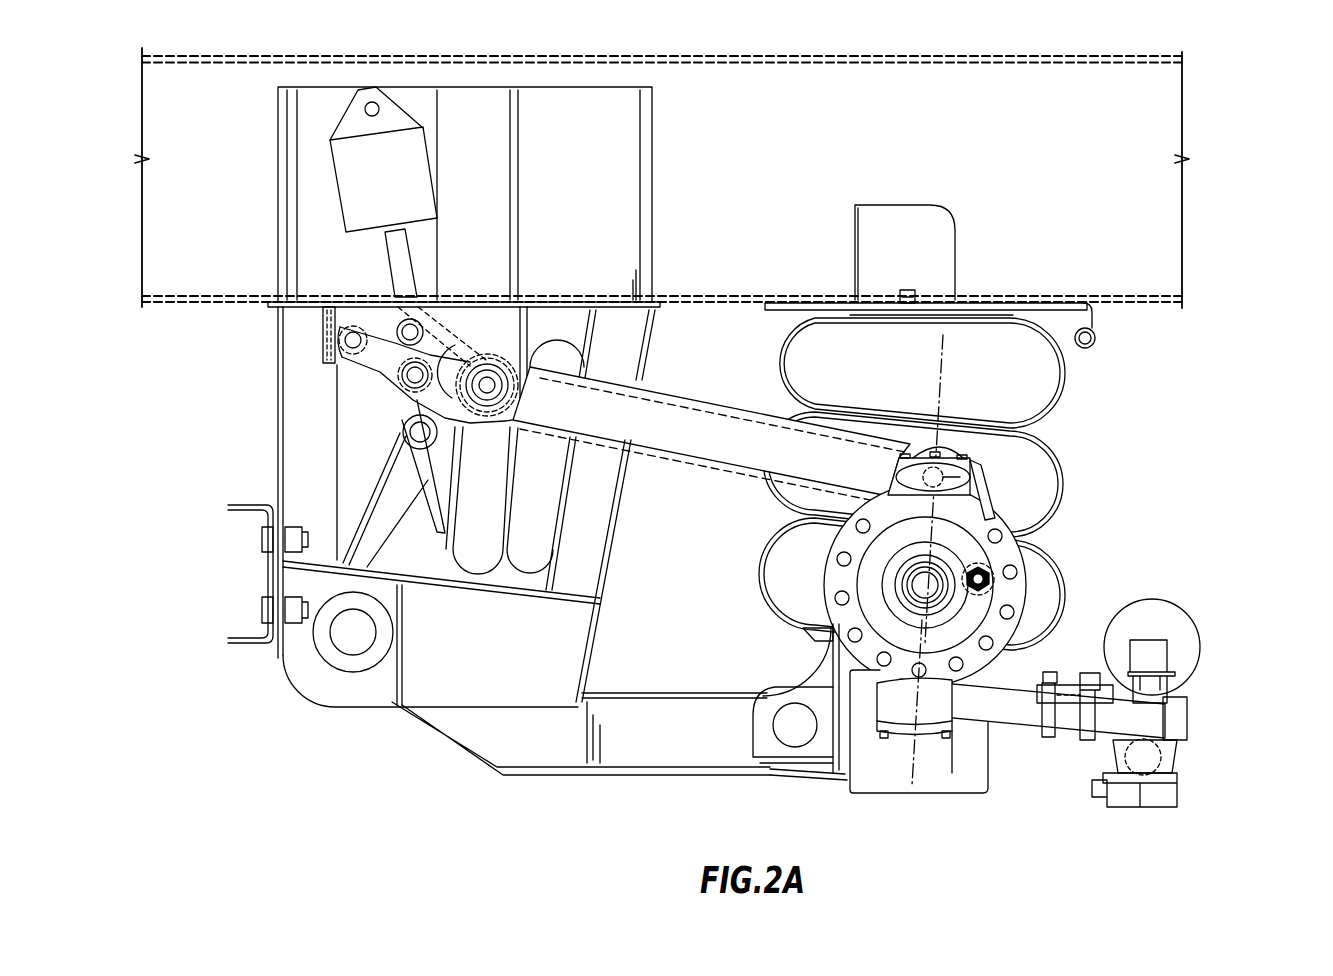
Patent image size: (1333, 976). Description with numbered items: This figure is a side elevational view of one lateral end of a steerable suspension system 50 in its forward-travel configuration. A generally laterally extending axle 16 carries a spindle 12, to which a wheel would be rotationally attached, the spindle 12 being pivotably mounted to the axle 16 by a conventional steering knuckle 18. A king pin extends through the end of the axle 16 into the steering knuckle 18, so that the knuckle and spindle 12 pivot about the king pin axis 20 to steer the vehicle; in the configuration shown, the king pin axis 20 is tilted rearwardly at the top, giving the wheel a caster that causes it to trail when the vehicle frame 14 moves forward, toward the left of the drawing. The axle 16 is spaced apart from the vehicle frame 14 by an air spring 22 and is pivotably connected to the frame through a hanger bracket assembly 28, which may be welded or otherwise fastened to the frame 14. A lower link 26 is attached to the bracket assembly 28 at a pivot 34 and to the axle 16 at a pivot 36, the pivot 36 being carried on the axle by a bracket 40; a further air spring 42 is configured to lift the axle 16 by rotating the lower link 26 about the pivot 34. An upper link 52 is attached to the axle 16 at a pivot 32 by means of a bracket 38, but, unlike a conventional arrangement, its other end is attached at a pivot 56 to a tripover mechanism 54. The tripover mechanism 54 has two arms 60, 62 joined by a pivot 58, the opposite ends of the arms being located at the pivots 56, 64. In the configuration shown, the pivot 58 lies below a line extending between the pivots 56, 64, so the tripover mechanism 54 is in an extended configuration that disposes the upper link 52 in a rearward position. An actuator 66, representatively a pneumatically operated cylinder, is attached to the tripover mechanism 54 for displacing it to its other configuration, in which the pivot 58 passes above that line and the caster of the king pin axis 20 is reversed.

The spindle 12 is at (947, 597).
The vehicle frame 14 is at (1150, 306).
The axle 16 is at (973, 770).
The steering knuckle 18 is at (990, 718).
The king pin axis 20 is at (912, 745).
The air spring 22 is at (1065, 491).
The lower link 26 is at (672, 690).
The hanger bracket assembly 28 is at (277, 441).
The pivot 32 is at (986, 468).
The pivot 34 is at (376, 634).
The pivot 36 is at (790, 700).
The bracket 38 is at (985, 501).
The bracket 40 is at (752, 746).
The air spring 42 is at (600, 336).
The steerable suspension system 50 is at (1235, 117).
The upper link 52 is at (660, 455).
The tripover mechanism 54 is at (458, 288).
The pivot 56 is at (493, 365).
The pivot 58 is at (403, 396).
The arm 60 is at (372, 373).
The arm 62 is at (477, 426).
The pivot 64 is at (345, 339).
The actuator 66 is at (428, 156).